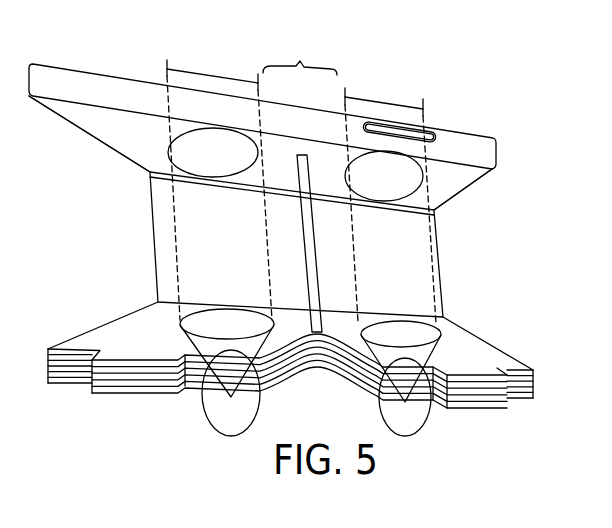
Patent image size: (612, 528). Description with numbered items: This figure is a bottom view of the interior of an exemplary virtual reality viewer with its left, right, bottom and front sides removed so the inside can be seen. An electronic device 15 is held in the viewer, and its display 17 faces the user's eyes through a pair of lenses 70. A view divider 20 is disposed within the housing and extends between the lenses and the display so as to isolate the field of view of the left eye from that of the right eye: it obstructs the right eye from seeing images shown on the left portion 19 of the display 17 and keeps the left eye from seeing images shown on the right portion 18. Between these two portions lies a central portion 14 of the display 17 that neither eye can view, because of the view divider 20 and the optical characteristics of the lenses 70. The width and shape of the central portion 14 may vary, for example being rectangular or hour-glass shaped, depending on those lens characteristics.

The central portion 14 is at (300, 51).
The electronic device 15 is at (132, 97).
The display 17 is at (132, 137).
The right portion 18 is at (213, 72).
The left portion 19 is at (379, 100).
The view divider 20 is at (313, 242).
The lenses 70 is at (413, 339).